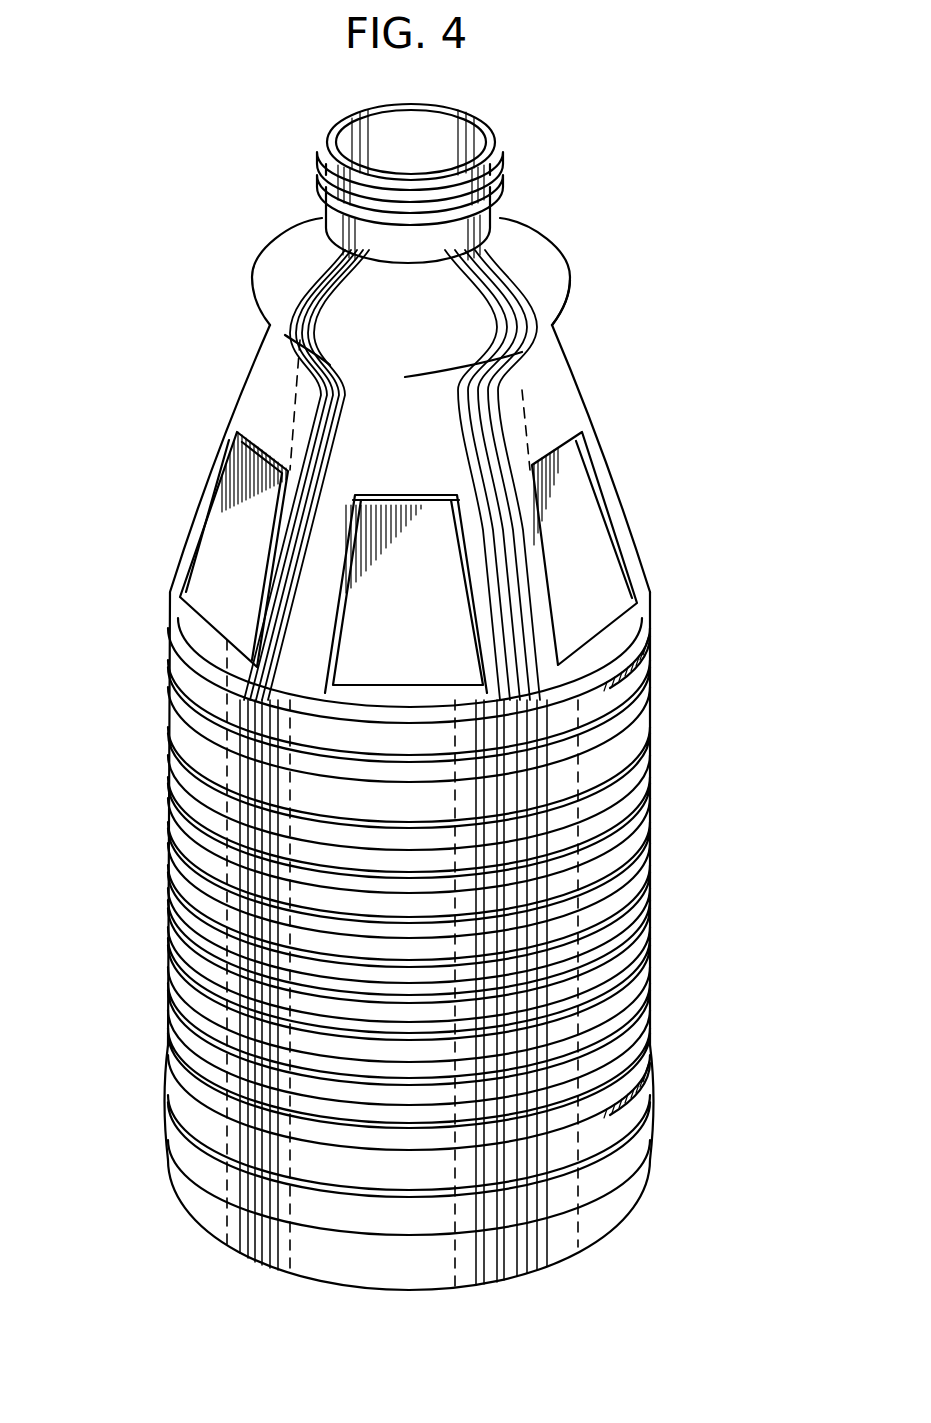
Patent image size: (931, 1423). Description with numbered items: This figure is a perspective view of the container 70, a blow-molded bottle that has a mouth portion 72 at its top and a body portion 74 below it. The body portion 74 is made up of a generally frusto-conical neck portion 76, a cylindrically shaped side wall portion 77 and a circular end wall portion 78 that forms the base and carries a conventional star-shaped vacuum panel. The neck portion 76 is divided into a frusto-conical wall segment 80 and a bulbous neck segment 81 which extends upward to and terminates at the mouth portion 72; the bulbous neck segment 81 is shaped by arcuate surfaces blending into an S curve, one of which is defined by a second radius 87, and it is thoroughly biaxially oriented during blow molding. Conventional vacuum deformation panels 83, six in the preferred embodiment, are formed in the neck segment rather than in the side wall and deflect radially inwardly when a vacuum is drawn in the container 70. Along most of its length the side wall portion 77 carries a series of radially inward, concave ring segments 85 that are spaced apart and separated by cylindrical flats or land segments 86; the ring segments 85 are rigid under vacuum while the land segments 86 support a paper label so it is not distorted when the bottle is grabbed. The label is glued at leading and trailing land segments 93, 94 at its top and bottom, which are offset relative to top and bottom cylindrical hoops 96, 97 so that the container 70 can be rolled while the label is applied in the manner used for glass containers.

The container 70 is at (373, 698).
The mouth portion 72 is at (375, 161).
The body portion 74 is at (520, 935).
The neck portion 76 is at (615, 547).
The side wall portion 77 is at (462, 941).
The end wall portion 78 is at (409, 1255).
The frusto-conical wall segment 80 is at (602, 458).
The bulbous neck segment 81 is at (604, 302).
The vacuum deformation panels 83 is at (407, 431).
The ring segments 85 is at (456, 271).
The land segments 86 is at (450, 983).
The second radius 87 is at (476, 475).
The leading land segment 93 is at (455, 757).
The trailing land segment 94 is at (455, 1126).
The top cylindrical hoop 96 is at (460, 690).
The bottom cylindrical hoop 97 is at (453, 1186).